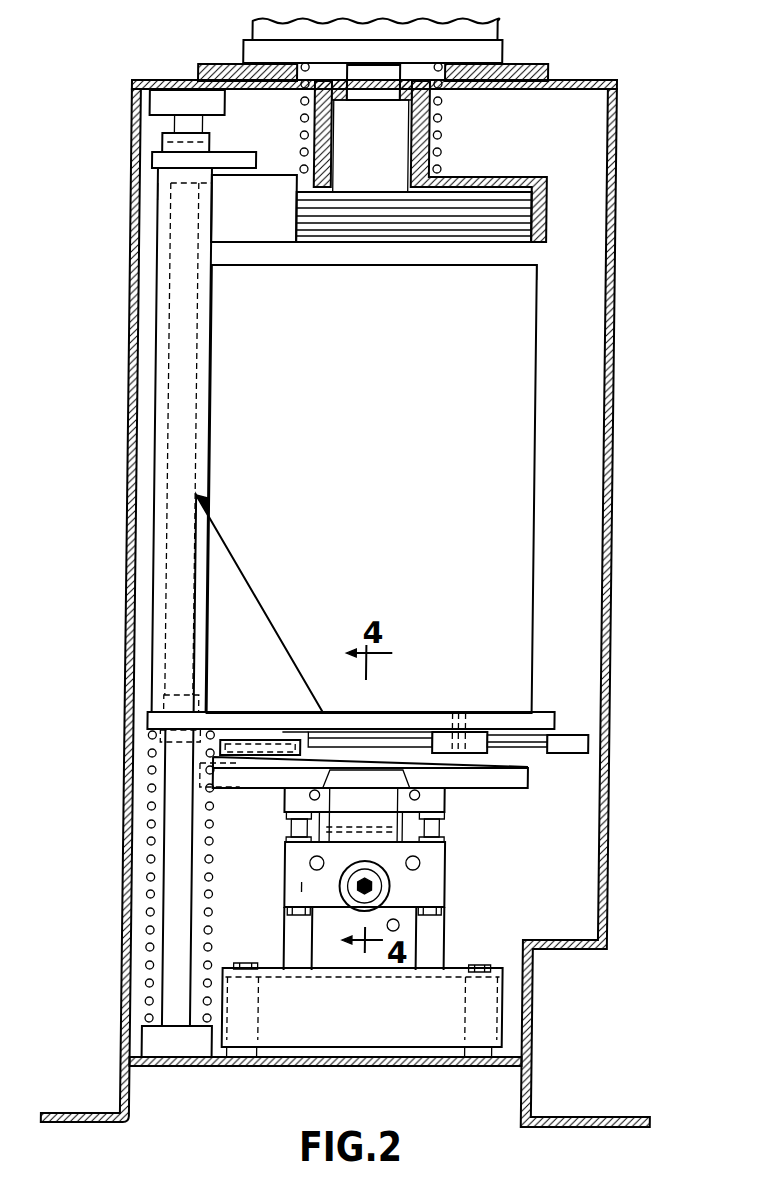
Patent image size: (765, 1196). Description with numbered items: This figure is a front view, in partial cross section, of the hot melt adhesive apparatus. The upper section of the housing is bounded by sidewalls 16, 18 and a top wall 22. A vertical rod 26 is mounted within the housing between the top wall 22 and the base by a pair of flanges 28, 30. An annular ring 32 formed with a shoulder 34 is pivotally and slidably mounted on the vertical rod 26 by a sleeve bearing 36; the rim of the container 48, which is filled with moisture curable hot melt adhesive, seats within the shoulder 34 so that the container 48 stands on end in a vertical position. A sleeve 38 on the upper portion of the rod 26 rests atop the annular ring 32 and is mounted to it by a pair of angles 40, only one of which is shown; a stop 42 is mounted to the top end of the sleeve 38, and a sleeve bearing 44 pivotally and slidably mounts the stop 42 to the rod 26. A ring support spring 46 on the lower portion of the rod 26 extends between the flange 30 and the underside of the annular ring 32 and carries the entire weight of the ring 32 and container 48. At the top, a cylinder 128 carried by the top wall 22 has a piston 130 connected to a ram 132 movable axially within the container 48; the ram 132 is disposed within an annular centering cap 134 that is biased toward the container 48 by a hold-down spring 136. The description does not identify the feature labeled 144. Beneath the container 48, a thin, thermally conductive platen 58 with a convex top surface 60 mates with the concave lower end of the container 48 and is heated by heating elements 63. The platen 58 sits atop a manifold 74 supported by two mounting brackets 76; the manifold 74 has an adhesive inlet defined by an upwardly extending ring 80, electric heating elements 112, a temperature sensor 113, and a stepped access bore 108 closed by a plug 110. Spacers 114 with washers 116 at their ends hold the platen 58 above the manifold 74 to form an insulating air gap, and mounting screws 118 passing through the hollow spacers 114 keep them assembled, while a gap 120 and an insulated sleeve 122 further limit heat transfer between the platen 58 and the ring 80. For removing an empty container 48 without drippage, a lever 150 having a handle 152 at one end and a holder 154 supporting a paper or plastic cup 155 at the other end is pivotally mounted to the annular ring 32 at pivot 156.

The sidewall 16 is at (133, 390).
The sidewall 18 is at (620, 340).
The top wall 22 is at (604, 81).
The cylinder 128 is at (500, 28).
The piston 130 is at (384, 93).
The hold-down spring 136 is at (442, 110).
The annular centering cap 134 is at (530, 178).
The ram 132 is at (421, 210).
The block corner 144 is at (541, 266).
The container 48 is at (543, 460).
The flange 28 is at (166, 102).
The stop 42 is at (244, 152).
The sleeve bearing 44 is at (153, 190).
The sleeve 38 is at (216, 418).
The angle 40 is at (267, 598).
The annular ring 32 is at (395, 713).
The sleeve bearing 36 is at (174, 693).
The vertical rod 26 is at (184, 797).
The ring support spring 46 is at (157, 848).
The flange 30 is at (209, 1063).
The holder 154 is at (262, 728).
The lever 150 is at (511, 740).
The handle 152 is at (576, 742).
The pivot 156 is at (468, 713).
The shoulder 34 is at (548, 708).
The cup 155 is at (292, 733).
The platen 58 is at (540, 782).
The convex top surface 60 is at (296, 762).
The second set of heating elements 63 is at (420, 792).
The ring 80 is at (378, 811).
The washers 116 is at (455, 825).
The gap 120 is at (330, 838).
The insulated sleeve 122 is at (385, 840).
The stepped access bore 108 is at (400, 886).
The plug 110 is at (373, 895).
The spacers 114 is at (319, 862).
The electric heating elements 112 is at (430, 863).
The temperature sensor 113 is at (410, 928).
The manifold 74 is at (300, 908).
The mounting screw 118 is at (310, 915).
The mounting brackets 76 is at (386, 1032).